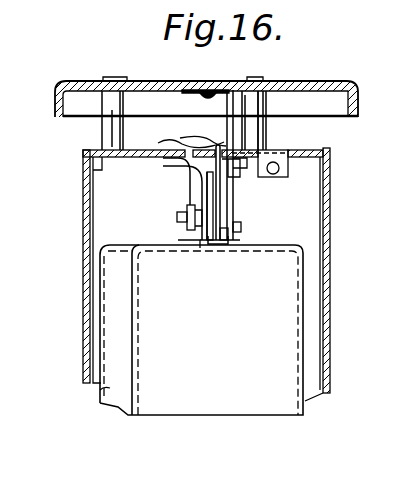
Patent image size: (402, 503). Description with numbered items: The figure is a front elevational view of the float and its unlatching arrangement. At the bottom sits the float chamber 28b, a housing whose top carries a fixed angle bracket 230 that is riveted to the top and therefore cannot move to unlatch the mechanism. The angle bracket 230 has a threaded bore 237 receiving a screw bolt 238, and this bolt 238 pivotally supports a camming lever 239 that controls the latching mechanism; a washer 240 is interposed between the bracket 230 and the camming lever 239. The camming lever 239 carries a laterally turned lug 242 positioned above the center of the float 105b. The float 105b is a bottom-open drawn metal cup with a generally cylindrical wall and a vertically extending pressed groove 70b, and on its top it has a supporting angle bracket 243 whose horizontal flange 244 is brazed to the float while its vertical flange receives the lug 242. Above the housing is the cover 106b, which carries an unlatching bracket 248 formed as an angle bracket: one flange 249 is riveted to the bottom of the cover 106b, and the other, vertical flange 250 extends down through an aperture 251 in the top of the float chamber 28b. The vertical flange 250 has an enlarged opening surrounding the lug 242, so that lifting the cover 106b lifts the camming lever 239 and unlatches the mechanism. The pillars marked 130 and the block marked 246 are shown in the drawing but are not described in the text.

The cover 106b is at (316, 90).
The support pillar 130 is at (104, 137).
The flange 249 is at (200, 90).
The unlatching bracket 248 is at (224, 104).
The float chamber 28b is at (332, 188).
The block 246 is at (233, 189).
The float 105b is at (238, 333).
The angle bracket 230 is at (186, 176).
The aperture 251 is at (188, 144).
The vertical flange 250 is at (210, 138).
The threaded bore 237 is at (186, 192).
The screw bolt 238 is at (224, 205).
The supporting angle bracket 243 is at (240, 228).
The camming lever 239 is at (228, 236).
The horizontal flange 244 is at (212, 245).
The washer 240 is at (187, 243).
The pressed groove 70b is at (104, 389).
The lug 242 is at (268, 146).